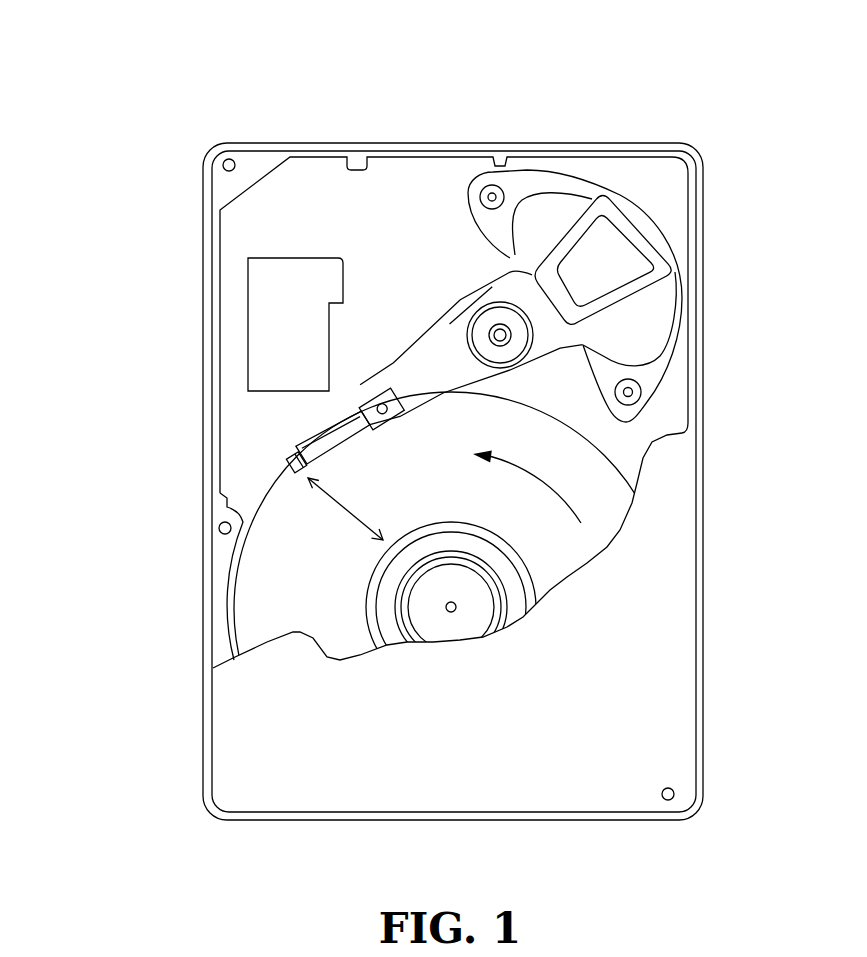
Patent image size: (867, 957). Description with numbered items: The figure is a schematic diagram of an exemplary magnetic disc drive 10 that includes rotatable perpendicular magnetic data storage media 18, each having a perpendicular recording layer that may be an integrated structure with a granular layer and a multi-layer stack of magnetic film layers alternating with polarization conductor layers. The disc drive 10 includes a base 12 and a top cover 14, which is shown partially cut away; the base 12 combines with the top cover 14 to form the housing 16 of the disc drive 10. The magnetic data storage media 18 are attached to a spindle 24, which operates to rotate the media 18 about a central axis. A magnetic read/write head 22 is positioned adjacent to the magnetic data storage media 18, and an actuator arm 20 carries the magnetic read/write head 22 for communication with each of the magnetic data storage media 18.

The magnetic disc drive 10 is at (198, 66).
The base 12 is at (398, 244).
The top cover 14 is at (446, 697).
The housing 16 is at (698, 405).
The magnetic data storage media 18 is at (415, 494).
The actuator arm 20 is at (447, 368).
The magnetic read/write head 22 is at (290, 458).
The spindle 24 is at (446, 607).